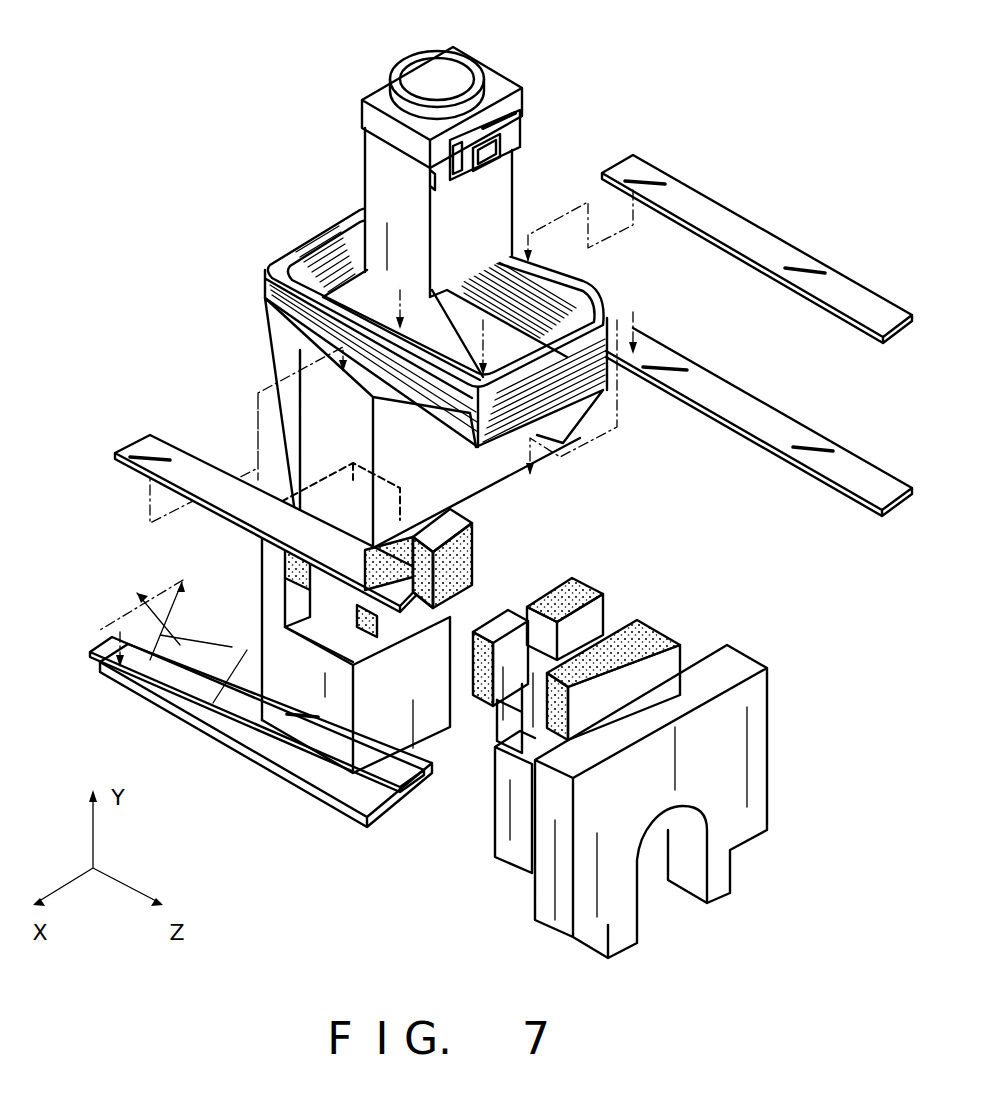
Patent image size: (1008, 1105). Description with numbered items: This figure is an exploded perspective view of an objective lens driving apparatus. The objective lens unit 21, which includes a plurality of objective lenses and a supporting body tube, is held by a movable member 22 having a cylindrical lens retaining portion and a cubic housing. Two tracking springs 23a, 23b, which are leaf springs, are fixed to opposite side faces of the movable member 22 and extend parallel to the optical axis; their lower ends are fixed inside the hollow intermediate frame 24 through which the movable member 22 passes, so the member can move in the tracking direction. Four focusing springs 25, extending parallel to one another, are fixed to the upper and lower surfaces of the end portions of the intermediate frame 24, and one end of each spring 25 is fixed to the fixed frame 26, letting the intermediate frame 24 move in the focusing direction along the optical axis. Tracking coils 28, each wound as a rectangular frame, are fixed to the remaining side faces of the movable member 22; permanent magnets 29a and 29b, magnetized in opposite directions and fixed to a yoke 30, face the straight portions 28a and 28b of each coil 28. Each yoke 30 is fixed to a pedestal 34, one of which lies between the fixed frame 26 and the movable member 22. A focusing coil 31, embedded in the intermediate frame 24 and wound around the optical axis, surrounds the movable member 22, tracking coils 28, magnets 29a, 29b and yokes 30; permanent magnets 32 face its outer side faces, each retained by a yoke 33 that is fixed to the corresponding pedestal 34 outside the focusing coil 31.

The objective lens unit 21 is at (433, 80).
The movable member 22 is at (500, 78).
The tracking spring 23a is at (383, 153).
The tracking spring 23b is at (512, 206).
The intermediate frame 24 is at (282, 346).
The focusing spring 25 is at (187, 475).
The fixed frame 26 is at (733, 667).
The tracking coil 28 is at (515, 110).
The straight portion 28a is at (433, 186).
The straight portion 28b is at (513, 141).
The permanent magnet 29a is at (468, 515).
The permanent magnet 29b is at (385, 638).
The yoke 30 is at (343, 630).
The focusing coil 31 is at (320, 243).
The permanent magnet 32 is at (275, 618).
The yoke 33 is at (275, 579).
The pedestal 34 is at (308, 748).